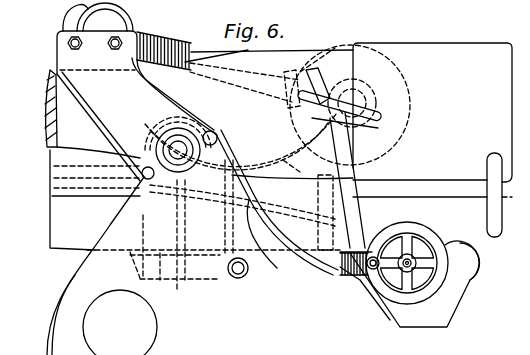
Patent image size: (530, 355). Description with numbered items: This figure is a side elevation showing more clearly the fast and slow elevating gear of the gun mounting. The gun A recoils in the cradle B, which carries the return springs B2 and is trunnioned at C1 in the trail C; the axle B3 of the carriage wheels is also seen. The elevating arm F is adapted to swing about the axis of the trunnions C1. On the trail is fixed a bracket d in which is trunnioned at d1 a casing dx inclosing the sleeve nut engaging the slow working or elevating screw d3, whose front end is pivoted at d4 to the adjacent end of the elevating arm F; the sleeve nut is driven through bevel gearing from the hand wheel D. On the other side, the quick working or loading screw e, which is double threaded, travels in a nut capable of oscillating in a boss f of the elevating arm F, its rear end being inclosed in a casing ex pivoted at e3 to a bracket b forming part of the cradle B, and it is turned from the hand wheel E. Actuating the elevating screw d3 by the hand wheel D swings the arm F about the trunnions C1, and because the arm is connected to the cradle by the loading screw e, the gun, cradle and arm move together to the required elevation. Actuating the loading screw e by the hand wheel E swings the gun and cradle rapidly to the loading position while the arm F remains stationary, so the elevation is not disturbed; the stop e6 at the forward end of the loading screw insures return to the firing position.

The elevating arm F is at (187, 312).
The stop e6 is at (70, 23).
The boss or projection f is at (107, 12).
The quick working screw e is at (245, 65).
The casing ex is at (326, 62).
The pivot e3 is at (350, 148).
The hand wheel E is at (432, 140).
The cradle B is at (220, 202).
The return springs B2 is at (92, 160).
The axle B3 is at (102, 266).
The trunnions C1 is at (179, 148).
The gun A is at (235, 111).
The bracket b is at (283, 160).
The trail C is at (238, 286).
The pivot d4 is at (240, 278).
The slow working screw d3 is at (345, 280).
The casing dx is at (423, 240).
The hand wheel D is at (433, 285).
The bracket d is at (404, 320).
The trunnion d1 is at (455, 262).